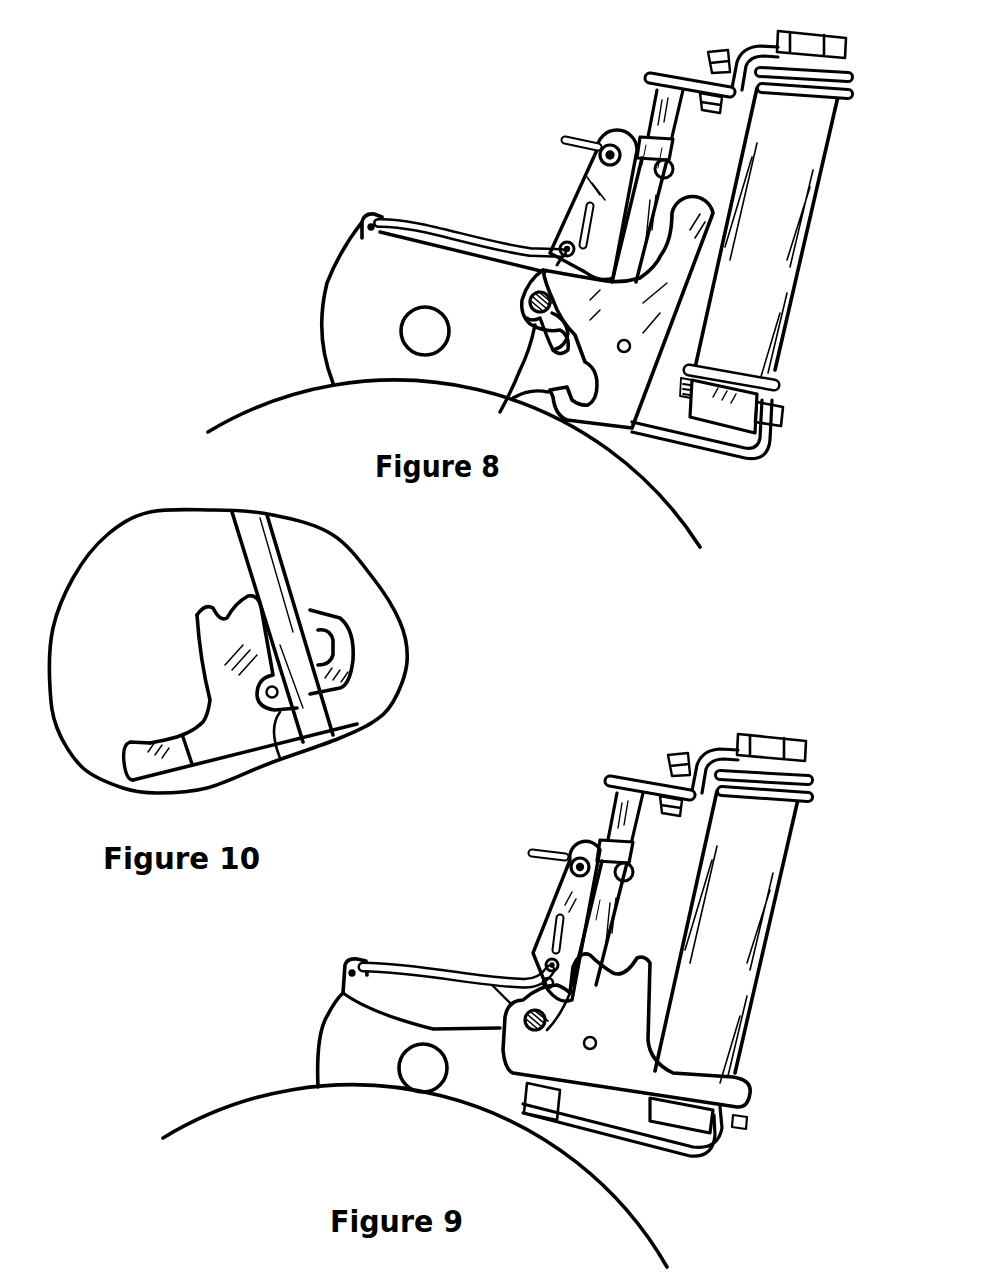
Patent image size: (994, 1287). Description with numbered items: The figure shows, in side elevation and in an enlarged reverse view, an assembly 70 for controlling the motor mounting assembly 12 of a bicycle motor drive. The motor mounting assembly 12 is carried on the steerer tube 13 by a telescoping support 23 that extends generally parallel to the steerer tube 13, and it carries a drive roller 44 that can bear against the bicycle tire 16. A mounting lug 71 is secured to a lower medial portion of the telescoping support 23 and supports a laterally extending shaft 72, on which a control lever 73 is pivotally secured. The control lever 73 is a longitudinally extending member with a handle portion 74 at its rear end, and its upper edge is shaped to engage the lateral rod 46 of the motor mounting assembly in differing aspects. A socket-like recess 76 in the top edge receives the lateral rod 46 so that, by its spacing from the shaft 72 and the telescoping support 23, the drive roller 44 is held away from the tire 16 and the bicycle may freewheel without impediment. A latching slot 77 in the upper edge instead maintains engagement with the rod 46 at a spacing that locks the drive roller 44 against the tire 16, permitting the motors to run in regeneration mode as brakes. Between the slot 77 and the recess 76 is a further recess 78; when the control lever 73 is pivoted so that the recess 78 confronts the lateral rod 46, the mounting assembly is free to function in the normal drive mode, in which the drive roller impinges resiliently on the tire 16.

In FIG. 8, the motor mounting assembly 12 is at (508, 137).
In FIG. 8, the steerer tube 13 is at (790, 305).
In FIG. 9, the steerer tube 13 is at (755, 1012).
In FIG. 8, the tire 16 is at (262, 400).
In FIG. 9, the tire 16 is at (230, 1107).
In FIG. 8, the telescoping support 23 is at (653, 205).
In FIG. 10, the telescoping support 23 is at (250, 547).
In FIG. 9, the telescoping support 23 is at (608, 893).
In FIG. 8, the drive roller 44 is at (402, 325).
In FIG. 9, the drive roller 44 is at (412, 1076).
In FIG. 8, the lateral rod 46 is at (530, 293).
In FIG. 9, the lateral rod 46 is at (490, 980).
In FIG. 10, the assembly 70 is at (347, 602).
In FIG. 10, the mounting lug 71 is at (287, 755).
In FIG. 8, the shaft 72 is at (624, 353).
In FIG. 10, the shaft 72 is at (262, 700).
In FIG. 9, the shaft 72 is at (589, 1050).
In FIG. 10, the control lever 73 is at (173, 658).
In FIG. 8, the handle portion 74 is at (762, 444).
In FIG. 10, the handle portion 74 is at (130, 762).
In FIG. 9, the handle portion 74 is at (760, 1097).
In FIG. 8, the socket-like recess 76 is at (528, 400).
In FIG. 10, the socket-like recess 76 is at (227, 612).
In FIG. 9, the socket-like recess 76 is at (343, 997).
In FIG. 8, the latching slot 77 is at (577, 389).
In FIG. 10, the latching slot 77 is at (304, 620).
In FIG. 9, the latching slot 77 is at (520, 1037).
In FIG. 8, the recess 78 is at (543, 360).
In FIG. 9, the recess 78 is at (537, 953).